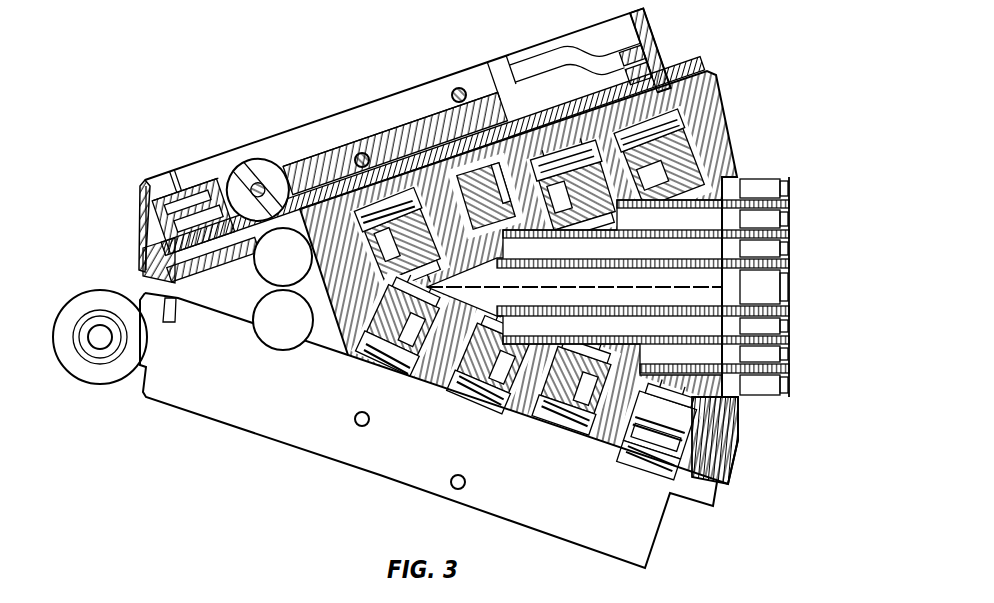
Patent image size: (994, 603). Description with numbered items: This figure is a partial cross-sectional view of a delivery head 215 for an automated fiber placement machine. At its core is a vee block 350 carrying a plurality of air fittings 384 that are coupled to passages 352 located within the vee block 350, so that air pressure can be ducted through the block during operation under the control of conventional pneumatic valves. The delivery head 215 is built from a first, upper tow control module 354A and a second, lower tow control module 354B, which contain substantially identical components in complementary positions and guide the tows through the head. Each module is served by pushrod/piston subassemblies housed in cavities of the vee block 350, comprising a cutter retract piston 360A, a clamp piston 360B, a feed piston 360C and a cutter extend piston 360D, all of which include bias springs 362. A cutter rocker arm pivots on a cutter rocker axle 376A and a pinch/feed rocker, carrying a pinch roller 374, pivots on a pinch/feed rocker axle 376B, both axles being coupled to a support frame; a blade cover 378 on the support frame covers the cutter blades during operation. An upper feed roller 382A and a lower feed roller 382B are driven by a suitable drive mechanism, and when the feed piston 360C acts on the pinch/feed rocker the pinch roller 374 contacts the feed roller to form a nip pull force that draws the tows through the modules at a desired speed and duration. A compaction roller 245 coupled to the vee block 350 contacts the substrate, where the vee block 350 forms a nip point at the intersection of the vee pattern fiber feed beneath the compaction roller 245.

The delivery head 215 is at (421, 284).
The compaction roller 245 is at (93, 294).
The vee block 350 is at (725, 133).
The passages 352 is at (708, 388).
The upper tow control module 354A is at (655, 49).
The lower tow control module 354B is at (638, 523).
The cutter retract piston 360A is at (390, 360).
The clamp piston 360B is at (480, 396).
The feed piston 360C is at (560, 423).
The cutter extend piston 360D is at (650, 452).
The bias springs 362 is at (414, 375).
The pinch roller 374 is at (252, 170).
The cutter rocker axle 376A is at (458, 88).
The pinch/feed rocker axle 376B is at (362, 153).
The blade cover 378 is at (140, 252).
The upper feed roller 382A is at (283, 270).
The lower feed roller 382B is at (270, 335).
The air fittings 384 is at (786, 160).